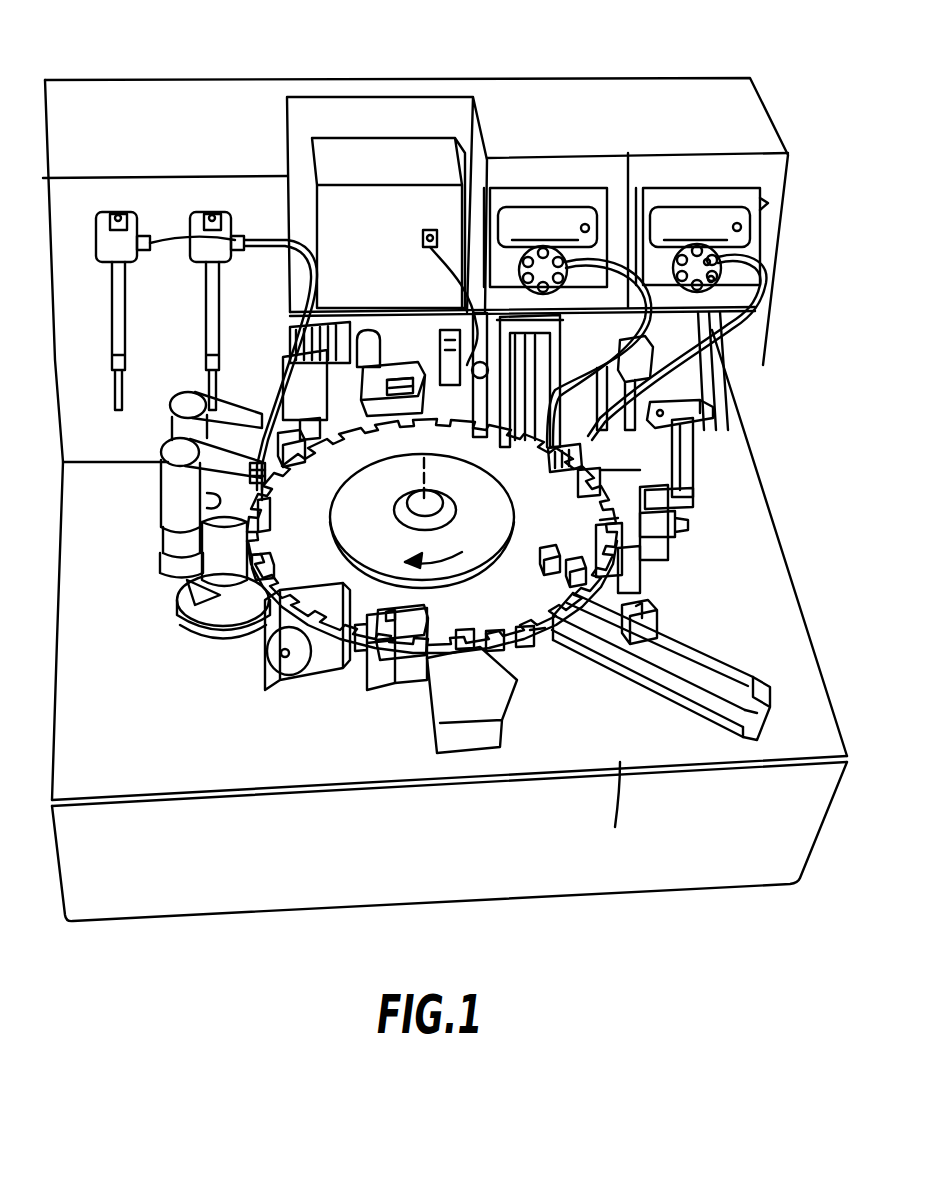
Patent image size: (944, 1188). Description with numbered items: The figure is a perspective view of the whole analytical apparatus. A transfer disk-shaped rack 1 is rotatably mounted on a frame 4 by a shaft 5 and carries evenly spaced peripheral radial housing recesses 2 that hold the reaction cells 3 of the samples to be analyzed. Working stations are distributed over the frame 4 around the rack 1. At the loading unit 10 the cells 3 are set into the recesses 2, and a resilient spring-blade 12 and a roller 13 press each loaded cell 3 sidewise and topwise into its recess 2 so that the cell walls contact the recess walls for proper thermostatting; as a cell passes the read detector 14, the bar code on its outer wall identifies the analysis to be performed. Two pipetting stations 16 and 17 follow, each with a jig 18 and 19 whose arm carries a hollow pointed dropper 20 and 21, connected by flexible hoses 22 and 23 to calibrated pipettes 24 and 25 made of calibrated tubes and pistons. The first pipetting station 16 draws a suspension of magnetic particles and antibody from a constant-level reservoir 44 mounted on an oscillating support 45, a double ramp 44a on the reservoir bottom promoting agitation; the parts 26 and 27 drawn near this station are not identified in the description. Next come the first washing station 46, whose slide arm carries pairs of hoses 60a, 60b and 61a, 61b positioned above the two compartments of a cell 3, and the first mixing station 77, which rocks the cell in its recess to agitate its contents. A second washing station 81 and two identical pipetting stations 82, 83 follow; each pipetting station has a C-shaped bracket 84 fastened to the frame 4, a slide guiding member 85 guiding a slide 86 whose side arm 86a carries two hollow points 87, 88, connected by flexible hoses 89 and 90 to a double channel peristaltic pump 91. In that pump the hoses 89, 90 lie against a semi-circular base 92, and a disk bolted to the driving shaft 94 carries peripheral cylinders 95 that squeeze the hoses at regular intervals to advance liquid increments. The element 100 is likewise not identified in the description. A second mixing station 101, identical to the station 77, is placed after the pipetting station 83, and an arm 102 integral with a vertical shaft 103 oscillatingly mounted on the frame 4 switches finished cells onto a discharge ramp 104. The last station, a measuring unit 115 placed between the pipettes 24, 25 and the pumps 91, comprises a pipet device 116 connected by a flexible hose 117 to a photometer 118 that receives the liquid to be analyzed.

The transfer disk-shaped rack 1 is at (432, 536).
The radial housing recess 2 is at (543, 627).
The reaction cell 3 is at (295, 462).
The frame 4 is at (611, 808).
The shaft 5 is at (413, 507).
The loading unit 10 is at (508, 729).
The spring-blade 12 is at (387, 663).
The roller 13 is at (397, 403).
The read detector 14 is at (322, 662).
The first pipetting station 16 is at (152, 577).
The second pipetting station 17 is at (177, 388).
The jig 18 is at (170, 457).
The jig 19 is at (173, 403).
The hollow pointed dropper 20 is at (263, 528).
The hollow pointed dropper 21 is at (268, 477).
The flexible hose 22 is at (277, 237).
The flexible hose 23 is at (163, 233).
The calibrated pipette 24 is at (215, 300).
The calibrated pipette 25 is at (117, 315).
The base cylinder 26 is at (167, 542).
The cylinder body 27 is at (163, 513).
The reservoir 44 is at (217, 625).
The double ramp 44a is at (177, 613).
The oscillating support 45 is at (230, 640).
The first washing station 46 is at (338, 322).
The hose 60a is at (308, 440).
The hose 60b is at (272, 345).
The hose 61a is at (350, 412).
The hose 61b is at (360, 340).
The first mixing station 77 is at (383, 338).
The washing station 81 is at (577, 323).
The pipetting station 82 is at (657, 348).
The pipetting station 83 is at (717, 408).
The C-shaped supporting bracket 84 is at (693, 473).
The slide guiding member 85 is at (693, 447).
The slide 86 is at (657, 500).
The side arm 86a is at (585, 488).
The hollow point 87 is at (547, 460).
The hollow point 88 is at (643, 533).
The flexible hose 89 is at (750, 318).
The flexible hose 90 is at (757, 309).
The double channel peristaltic pump 91 is at (760, 203).
The semi-circular base 92 is at (668, 227).
The driving shaft 94 is at (707, 265).
The cylinders 95 is at (710, 279).
The pin 100 is at (667, 530).
The second mixing station 101 is at (648, 558).
The arm 102 is at (596, 530).
The vertical shaft 103 is at (640, 570).
The discharge ramp 104 is at (753, 672).
The measuring unit 115 is at (408, 118).
The pipet device 116 is at (413, 353).
The flexible hose 117 is at (428, 230).
The photometer 118 is at (375, 160).